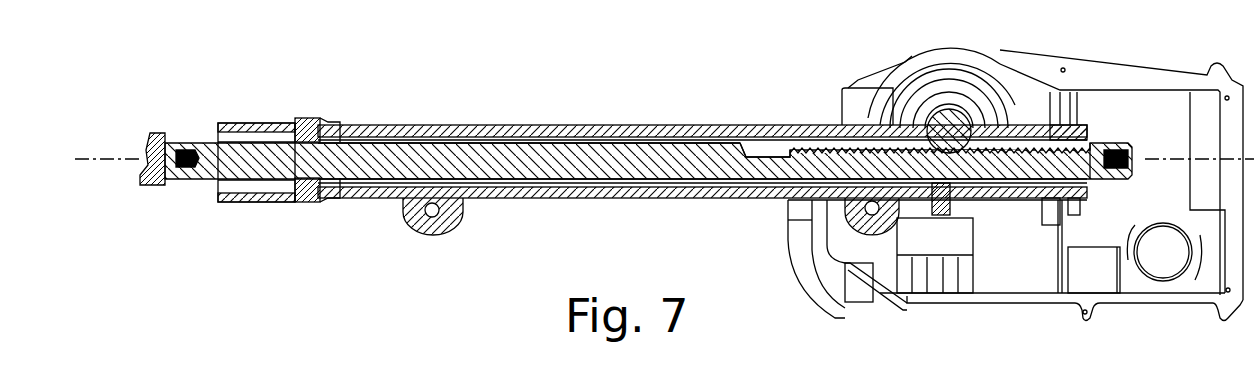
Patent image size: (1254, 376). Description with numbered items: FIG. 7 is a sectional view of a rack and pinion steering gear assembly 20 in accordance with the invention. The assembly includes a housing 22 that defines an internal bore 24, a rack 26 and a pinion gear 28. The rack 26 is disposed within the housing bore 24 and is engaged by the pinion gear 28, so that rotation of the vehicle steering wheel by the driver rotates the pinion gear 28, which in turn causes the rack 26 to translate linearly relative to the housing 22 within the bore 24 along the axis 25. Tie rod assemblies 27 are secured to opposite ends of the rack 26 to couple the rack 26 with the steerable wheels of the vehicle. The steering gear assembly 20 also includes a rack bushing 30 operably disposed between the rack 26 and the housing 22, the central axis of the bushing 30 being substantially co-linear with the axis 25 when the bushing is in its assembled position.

The steering gear assembly 20 is at (691, 171).
The housing 22 is at (465, 126).
The internal bore 24 is at (757, 148).
The axis 25 is at (78, 158).
The rack 26 is at (569, 170).
The tie rod assemblies 27 is at (165, 138).
The pinion gear 28 is at (922, 125).
The rack bushing 30 is at (303, 125).